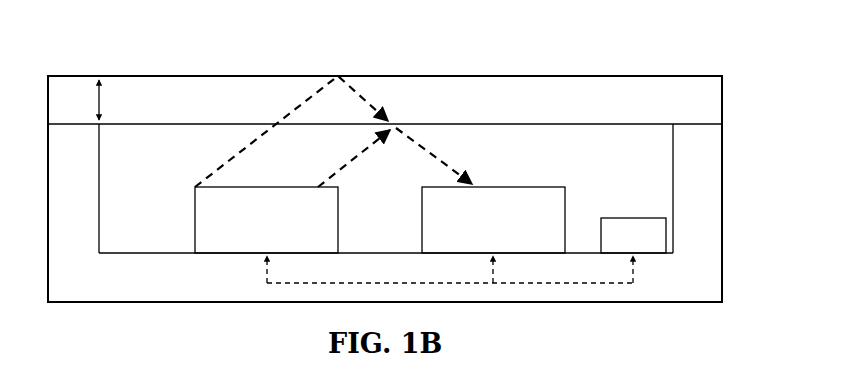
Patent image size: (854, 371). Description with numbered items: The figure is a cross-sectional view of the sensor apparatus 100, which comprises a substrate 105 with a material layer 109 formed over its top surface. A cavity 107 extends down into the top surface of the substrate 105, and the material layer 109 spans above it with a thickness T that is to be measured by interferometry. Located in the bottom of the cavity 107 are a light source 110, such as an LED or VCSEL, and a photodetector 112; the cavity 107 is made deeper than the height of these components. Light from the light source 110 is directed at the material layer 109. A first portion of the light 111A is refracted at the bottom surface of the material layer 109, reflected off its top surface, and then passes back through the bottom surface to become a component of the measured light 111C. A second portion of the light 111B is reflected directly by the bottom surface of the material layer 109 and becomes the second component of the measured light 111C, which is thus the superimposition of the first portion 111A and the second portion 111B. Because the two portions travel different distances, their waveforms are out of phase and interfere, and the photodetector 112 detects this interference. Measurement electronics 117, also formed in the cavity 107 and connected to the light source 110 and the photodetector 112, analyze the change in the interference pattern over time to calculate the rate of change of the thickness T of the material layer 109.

The sensor apparatus 100 is at (684, 31).
The substrate 105 is at (385, 287).
The cavity 107 is at (386, 188).
The material layer 109 is at (385, 106).
The light source 110 is at (266, 220).
The photodetector 112 is at (493, 220).
The measurement electronics 117 is at (638, 292).
The first portion of the light 111A is at (261, 131).
The second portion of the light 111B is at (366, 160).
The measured light 111C is at (457, 156).
The thickness of the material layer T is at (106, 100).